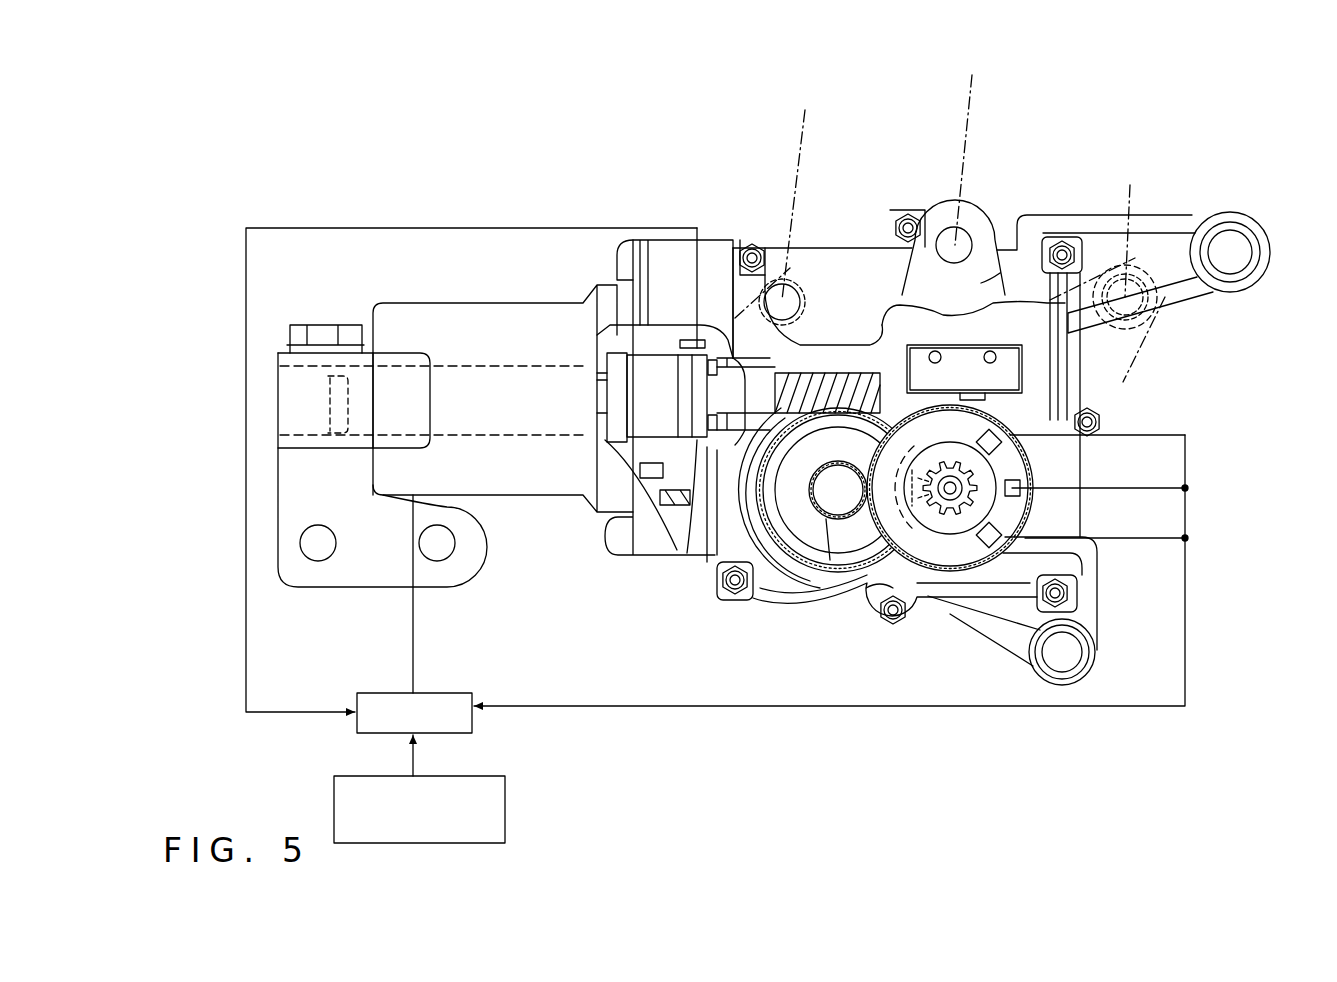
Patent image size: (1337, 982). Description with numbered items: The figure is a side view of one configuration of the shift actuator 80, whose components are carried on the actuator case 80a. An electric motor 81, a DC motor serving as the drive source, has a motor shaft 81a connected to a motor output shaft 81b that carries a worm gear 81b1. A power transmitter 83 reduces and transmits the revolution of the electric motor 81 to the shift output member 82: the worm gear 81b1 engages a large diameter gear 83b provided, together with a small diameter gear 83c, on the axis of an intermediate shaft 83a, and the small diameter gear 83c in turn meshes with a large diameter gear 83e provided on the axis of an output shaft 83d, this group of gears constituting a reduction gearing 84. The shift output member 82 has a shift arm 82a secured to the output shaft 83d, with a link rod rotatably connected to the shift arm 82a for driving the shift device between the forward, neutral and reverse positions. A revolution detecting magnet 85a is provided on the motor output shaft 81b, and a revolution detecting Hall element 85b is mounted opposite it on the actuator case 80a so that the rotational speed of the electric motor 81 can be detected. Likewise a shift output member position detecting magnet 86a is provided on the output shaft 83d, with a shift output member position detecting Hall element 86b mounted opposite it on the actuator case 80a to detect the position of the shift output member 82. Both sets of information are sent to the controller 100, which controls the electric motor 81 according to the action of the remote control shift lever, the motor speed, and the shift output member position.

The shift actuator 80 is at (750, 240).
The actuator case 80a is at (712, 265).
The electric motor 81 is at (533, 313).
The motor shaft 81a is at (593, 495).
The motor output shaft 81b is at (697, 507).
The worm gear 81b1 is at (865, 343).
The shift output member 82 is at (968, 200).
The shift arm 82a is at (1000, 300).
The power transmitter 83 is at (756, 608).
The intermediate shaft 83a is at (840, 520).
The large diameter gear 83b is at (788, 532).
The small diameter gear 83c is at (836, 495).
The output shaft 83d is at (940, 517).
The large diameter gear 83e is at (1022, 548).
The reduction gearing 84 is at (857, 612).
The revolution detecting magnet 85a is at (667, 556).
The revolution detecting Hall element 85b is at (690, 338).
The shift output member position detecting magnet 86a is at (1028, 452).
The shift output member position detecting Hall element 86b is at (1022, 513).
The controller 100 is at (378, 692).